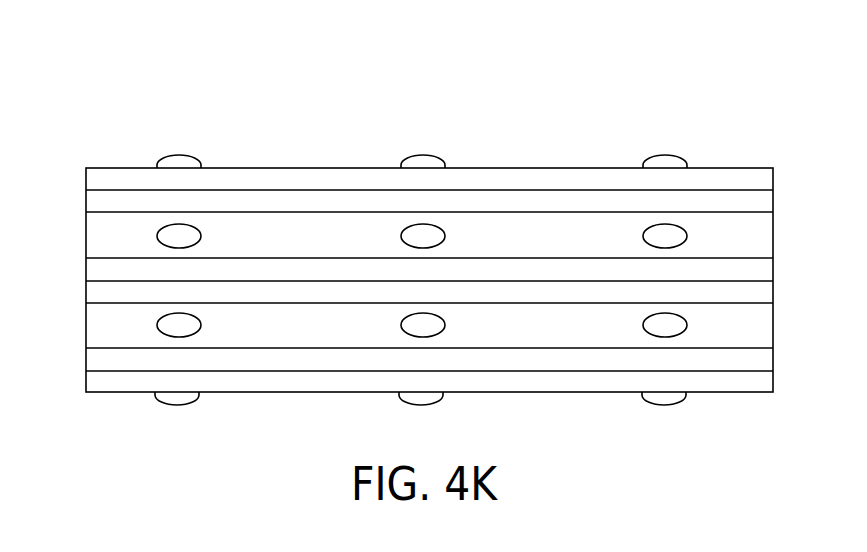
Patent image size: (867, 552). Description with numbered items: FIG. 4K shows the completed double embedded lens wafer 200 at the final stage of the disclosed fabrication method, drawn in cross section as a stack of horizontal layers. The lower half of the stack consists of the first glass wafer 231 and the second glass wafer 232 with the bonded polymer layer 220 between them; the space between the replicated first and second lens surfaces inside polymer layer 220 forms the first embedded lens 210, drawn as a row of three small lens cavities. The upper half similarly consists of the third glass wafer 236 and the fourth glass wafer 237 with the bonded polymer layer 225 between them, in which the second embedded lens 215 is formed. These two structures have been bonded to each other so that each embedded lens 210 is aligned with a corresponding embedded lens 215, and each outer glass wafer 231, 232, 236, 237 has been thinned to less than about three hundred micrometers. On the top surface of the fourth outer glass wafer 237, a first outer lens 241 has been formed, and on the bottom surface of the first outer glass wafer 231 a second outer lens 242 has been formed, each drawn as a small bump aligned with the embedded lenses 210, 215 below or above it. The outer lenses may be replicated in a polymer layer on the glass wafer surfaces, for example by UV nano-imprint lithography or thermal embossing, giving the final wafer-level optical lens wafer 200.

The lens wafer 200 is at (90, 78).
The embedded lens 210 is at (174, 329).
The embedded lens 215 is at (185, 233).
The polymer layer 220 is at (755, 328).
The polymer layer 225 is at (755, 238).
The first glass wafer 231 is at (88, 362).
The second glass wafer 232 is at (88, 290).
The third glass wafer 236 is at (88, 268).
The fourth glass wafer 237 is at (88, 203).
The first outer lens 241 is at (175, 163).
The second outer lens 242 is at (186, 397).